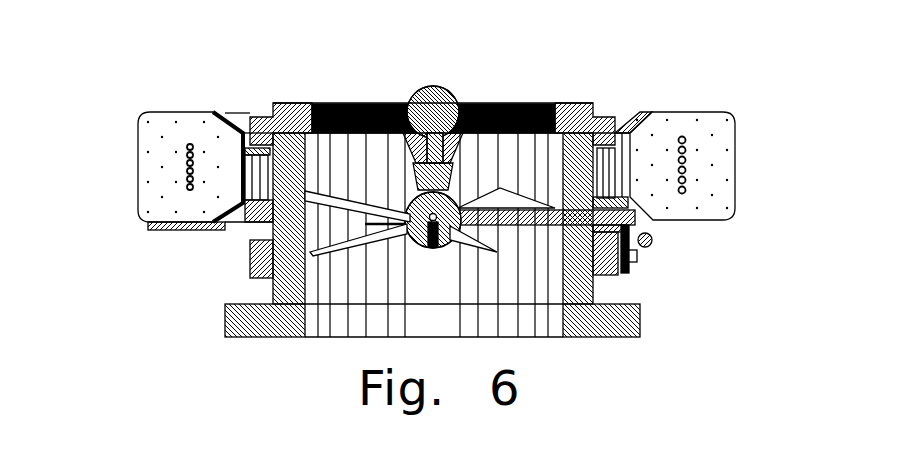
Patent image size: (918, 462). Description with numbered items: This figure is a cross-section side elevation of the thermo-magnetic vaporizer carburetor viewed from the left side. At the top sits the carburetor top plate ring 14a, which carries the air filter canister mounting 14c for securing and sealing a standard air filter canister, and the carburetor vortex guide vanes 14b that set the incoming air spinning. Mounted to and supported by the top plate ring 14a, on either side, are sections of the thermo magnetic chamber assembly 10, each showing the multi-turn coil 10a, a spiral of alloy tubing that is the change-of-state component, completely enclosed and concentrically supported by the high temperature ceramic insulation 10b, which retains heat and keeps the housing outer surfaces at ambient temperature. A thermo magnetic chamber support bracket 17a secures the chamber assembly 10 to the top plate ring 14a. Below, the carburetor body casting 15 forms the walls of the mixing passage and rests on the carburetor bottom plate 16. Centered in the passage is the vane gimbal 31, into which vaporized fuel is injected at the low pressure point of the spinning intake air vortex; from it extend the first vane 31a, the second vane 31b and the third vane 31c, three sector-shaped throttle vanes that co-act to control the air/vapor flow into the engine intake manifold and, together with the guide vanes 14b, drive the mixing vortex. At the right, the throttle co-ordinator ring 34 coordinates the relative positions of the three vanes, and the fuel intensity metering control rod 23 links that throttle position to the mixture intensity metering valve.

The thermo magnetic chamber assembly 10 is at (728, 106).
The multi-turn coil 10a is at (682, 137).
The high temperature ceramic insulation 10b is at (718, 147).
The top plate ring 14a is at (595, 103).
The carburetor vortex guide vanes 14b is at (485, 103).
The air filter canister mounting 14c is at (403, 101).
The carburetor body casting 15 is at (580, 290).
The carburetor bottom plate 16 is at (225, 320).
The thermo magnetic chamber support bracket 17a is at (193, 230).
The fuel intensity metering control rod 23 is at (652, 240).
The throttle co-ordinator ring 34 is at (622, 277).
The vane gimbal 31 is at (413, 205).
The vane 1 31a is at (362, 240).
The vane 2 31b is at (345, 198).
The vane 3 31c is at (502, 188).